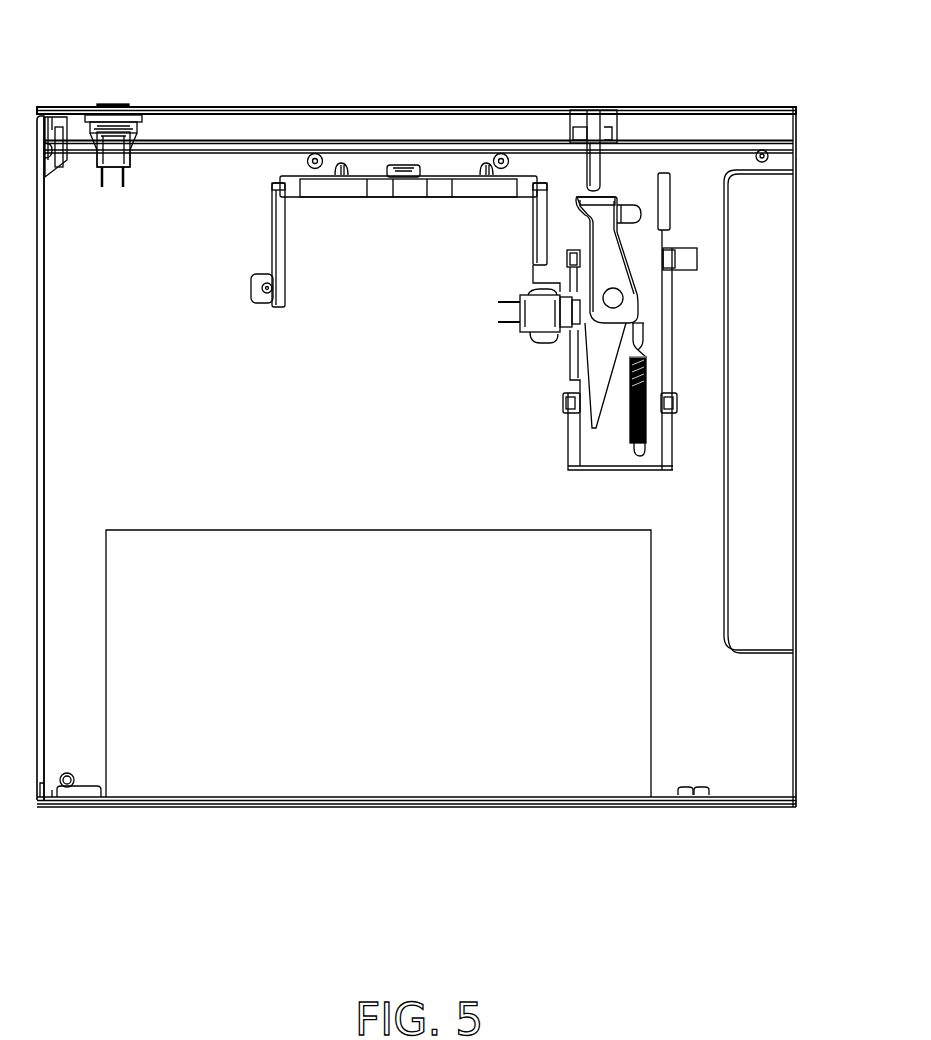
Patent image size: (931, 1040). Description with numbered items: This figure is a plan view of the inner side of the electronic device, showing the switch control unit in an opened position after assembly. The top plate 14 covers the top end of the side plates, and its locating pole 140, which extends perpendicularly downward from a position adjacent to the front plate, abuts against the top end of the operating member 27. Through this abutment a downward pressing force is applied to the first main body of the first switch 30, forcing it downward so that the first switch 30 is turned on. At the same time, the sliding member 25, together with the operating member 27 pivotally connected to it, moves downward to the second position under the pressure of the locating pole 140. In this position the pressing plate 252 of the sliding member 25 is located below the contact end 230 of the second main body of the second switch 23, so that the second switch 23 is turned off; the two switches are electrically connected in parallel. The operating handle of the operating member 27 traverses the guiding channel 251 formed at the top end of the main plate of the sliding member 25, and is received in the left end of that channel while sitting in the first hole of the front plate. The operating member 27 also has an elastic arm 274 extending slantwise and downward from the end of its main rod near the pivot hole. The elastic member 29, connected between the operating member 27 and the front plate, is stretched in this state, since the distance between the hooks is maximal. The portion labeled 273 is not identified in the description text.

The top plate 14 is at (315, 108).
The first switch 30 is at (113, 108).
The locating pole 140 is at (592, 160).
The hook portion of lever 273 is at (607, 195).
The guiding channel 251 is at (630, 215).
The operating member 27 is at (601, 255).
The contact end 230 is at (578, 302).
The second switch 23 is at (540, 315).
The pressing plate 252 is at (573, 360).
The elastic arm 274 is at (650, 377).
The elastic member 29 is at (648, 423).
The sliding member 25 is at (610, 447).